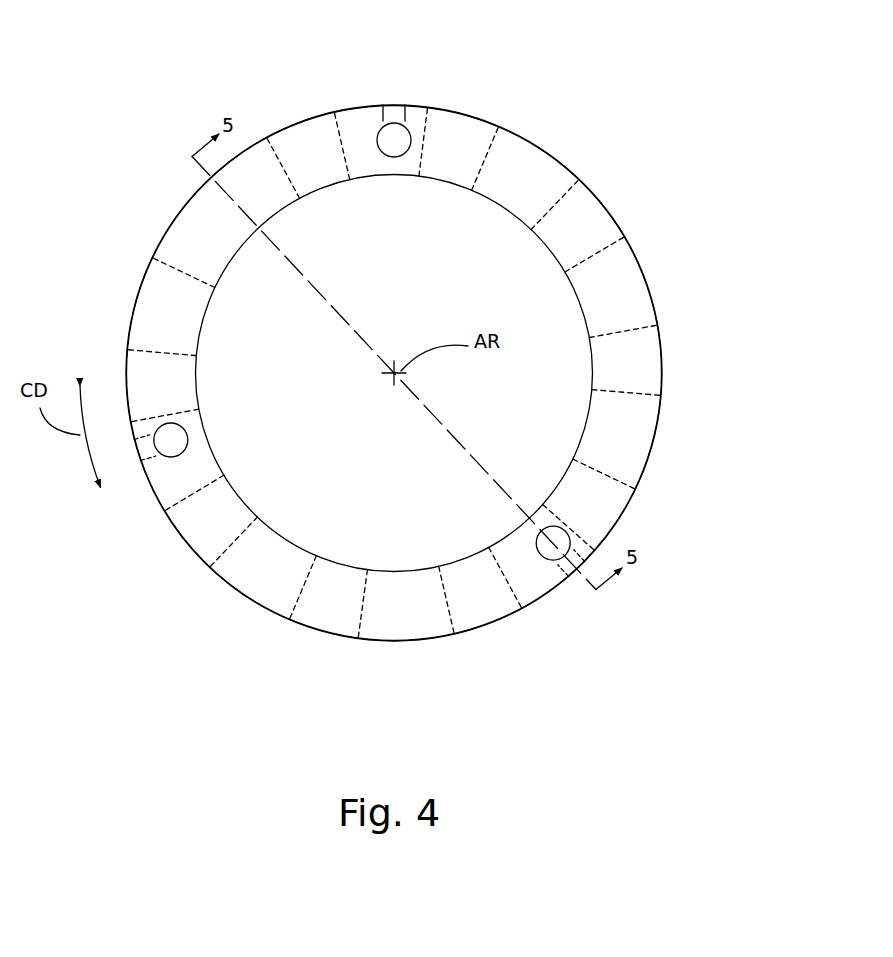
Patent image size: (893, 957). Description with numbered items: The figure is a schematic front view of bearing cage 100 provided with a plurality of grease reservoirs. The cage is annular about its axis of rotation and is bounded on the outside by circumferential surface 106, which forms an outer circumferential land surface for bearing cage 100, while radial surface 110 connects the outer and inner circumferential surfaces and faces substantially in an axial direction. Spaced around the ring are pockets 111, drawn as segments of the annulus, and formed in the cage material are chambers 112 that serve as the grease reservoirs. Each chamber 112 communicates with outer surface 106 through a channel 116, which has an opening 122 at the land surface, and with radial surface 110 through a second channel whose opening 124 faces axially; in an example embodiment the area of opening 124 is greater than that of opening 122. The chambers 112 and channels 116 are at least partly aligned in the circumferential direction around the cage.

The bearing cage 100 is at (685, 101).
The circumferential surface 106 is at (548, 153).
The radial surface 110 is at (634, 287).
The pockets 111 is at (330, 164).
The chamber 112 is at (400, 150).
The channel 116 is at (398, 112).
The opening 122 is at (390, 103).
The opening 124 is at (383, 152).